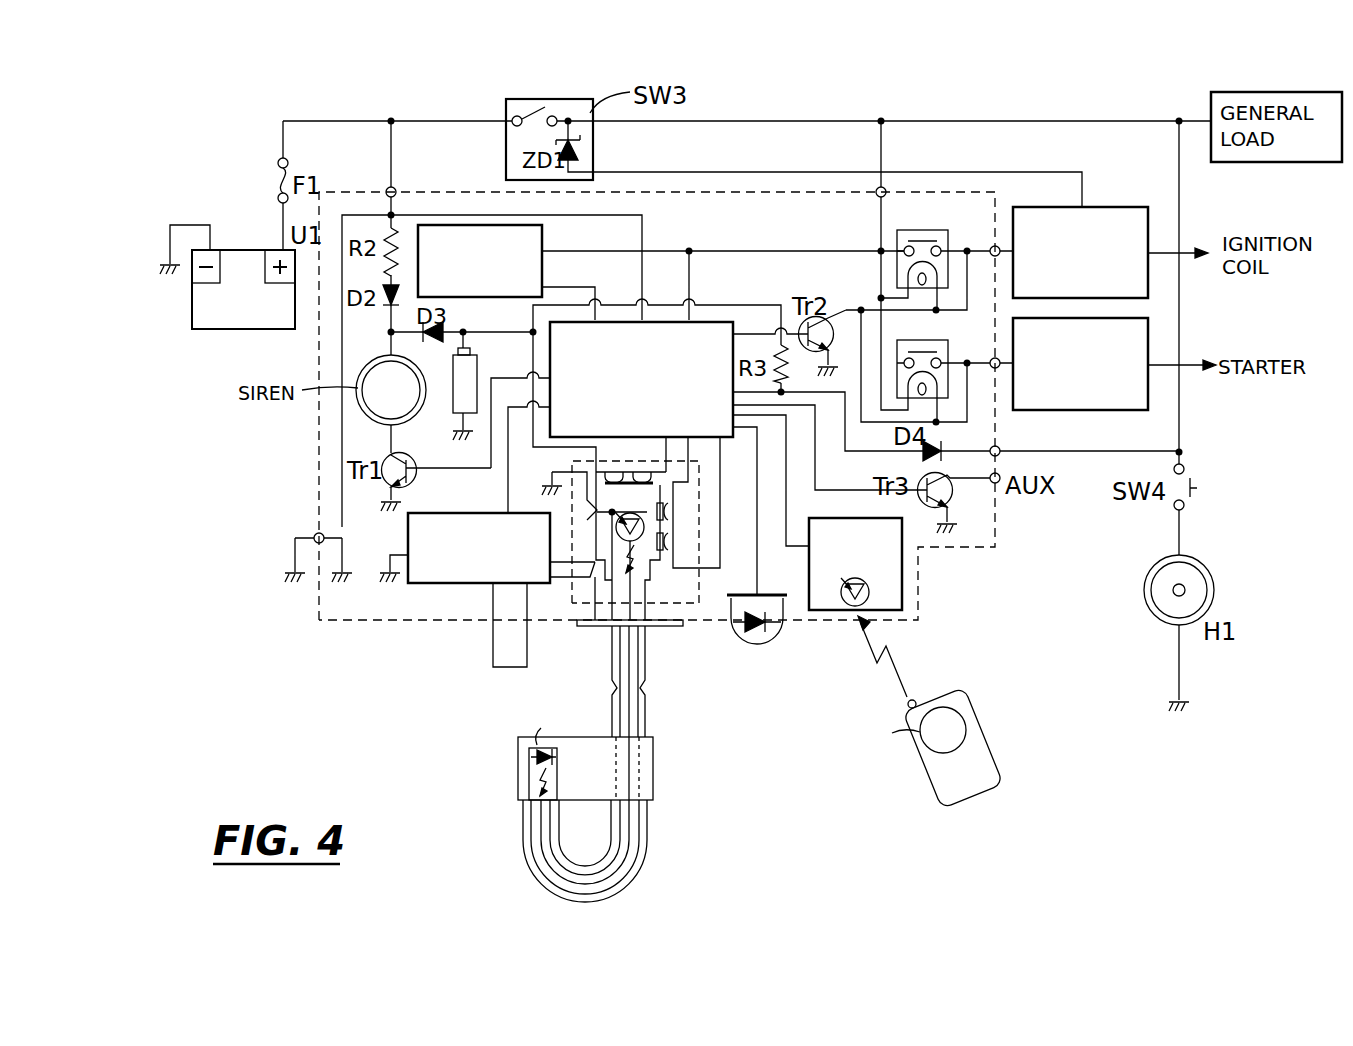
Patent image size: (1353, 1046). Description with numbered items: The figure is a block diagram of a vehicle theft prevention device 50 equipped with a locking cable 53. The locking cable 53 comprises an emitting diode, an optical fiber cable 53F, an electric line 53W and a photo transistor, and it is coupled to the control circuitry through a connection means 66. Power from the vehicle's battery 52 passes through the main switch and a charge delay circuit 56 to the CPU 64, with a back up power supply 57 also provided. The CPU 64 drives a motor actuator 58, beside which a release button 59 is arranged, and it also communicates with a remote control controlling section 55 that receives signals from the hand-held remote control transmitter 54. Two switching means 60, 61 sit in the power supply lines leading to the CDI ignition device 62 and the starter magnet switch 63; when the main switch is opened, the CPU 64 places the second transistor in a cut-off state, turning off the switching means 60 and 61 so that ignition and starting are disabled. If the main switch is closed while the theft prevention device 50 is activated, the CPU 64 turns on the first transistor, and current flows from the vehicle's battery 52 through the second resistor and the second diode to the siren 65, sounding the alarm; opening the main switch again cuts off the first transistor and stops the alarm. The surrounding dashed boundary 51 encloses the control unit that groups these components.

The vehicle theft prevention device 50 is at (858, 112).
The control unit 51 is at (437, 190).
The vehicle's battery 52 is at (232, 248).
The locking cable 53 is at (652, 720).
The optical fiber cable 53F is at (612, 660).
The electric line 53W is at (647, 828).
The remote control (transmitter) 54 is at (1000, 712).
The remote control controlling section 55 is at (902, 580).
The charge delay circuit 56 is at (542, 238).
The back up power supply 57 is at (494, 352).
The motor actuator 58 is at (480, 512).
The release button 59 is at (492, 655).
The switching means 60 is at (930, 230).
The switching means 61 is at (930, 340).
The CDI ignition device 62 is at (1105, 206).
The starter magnet switch 63 is at (1150, 336).
The CPU 64 is at (717, 321).
The siren 65 is at (416, 408).
The connection means 66 is at (704, 600).